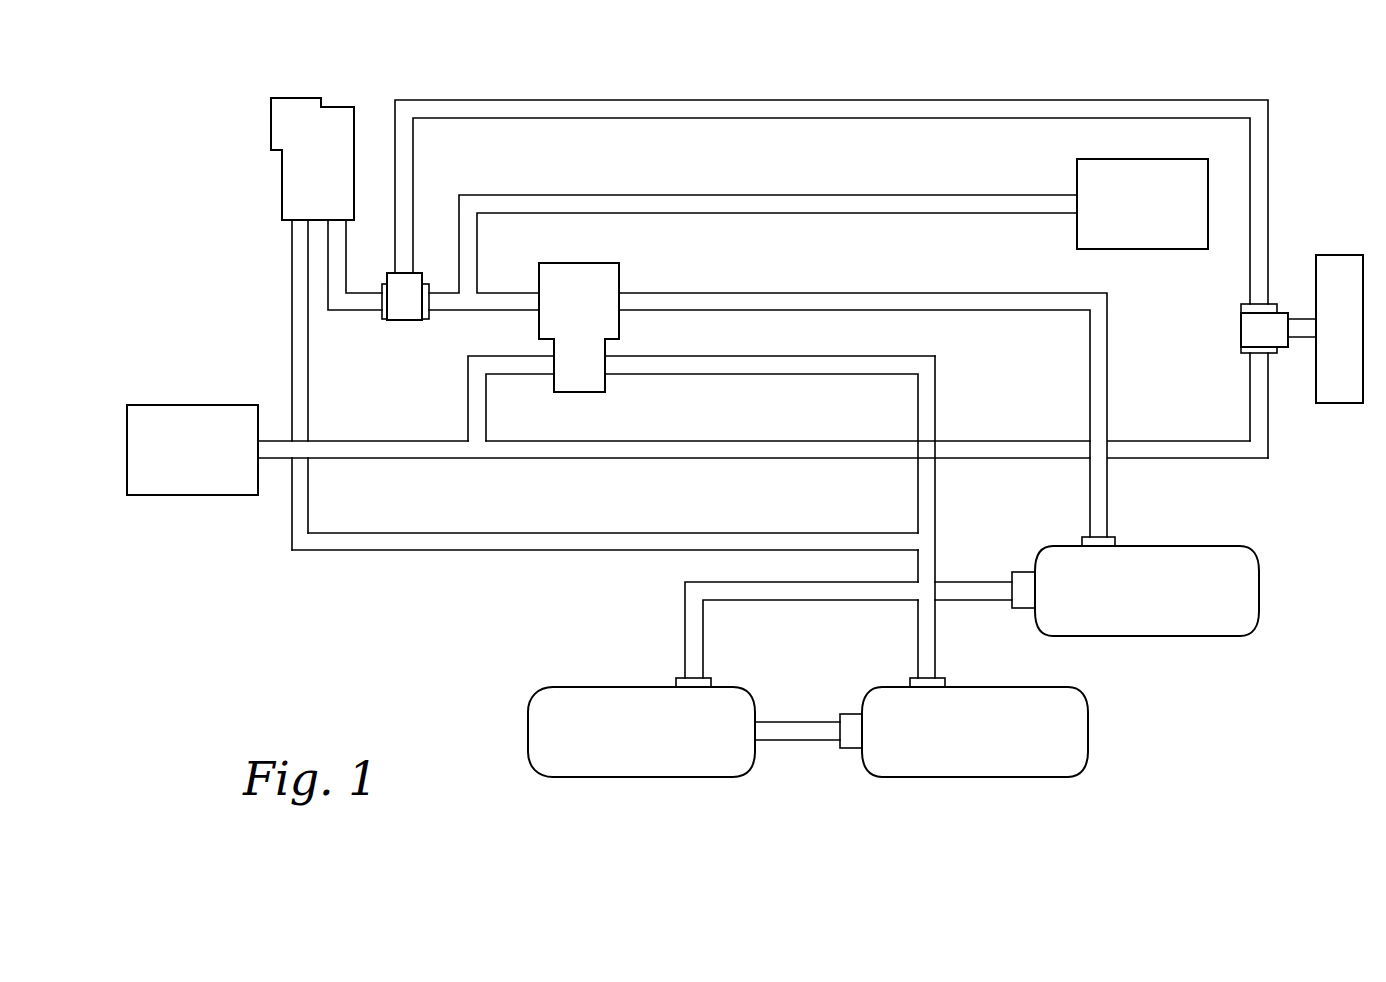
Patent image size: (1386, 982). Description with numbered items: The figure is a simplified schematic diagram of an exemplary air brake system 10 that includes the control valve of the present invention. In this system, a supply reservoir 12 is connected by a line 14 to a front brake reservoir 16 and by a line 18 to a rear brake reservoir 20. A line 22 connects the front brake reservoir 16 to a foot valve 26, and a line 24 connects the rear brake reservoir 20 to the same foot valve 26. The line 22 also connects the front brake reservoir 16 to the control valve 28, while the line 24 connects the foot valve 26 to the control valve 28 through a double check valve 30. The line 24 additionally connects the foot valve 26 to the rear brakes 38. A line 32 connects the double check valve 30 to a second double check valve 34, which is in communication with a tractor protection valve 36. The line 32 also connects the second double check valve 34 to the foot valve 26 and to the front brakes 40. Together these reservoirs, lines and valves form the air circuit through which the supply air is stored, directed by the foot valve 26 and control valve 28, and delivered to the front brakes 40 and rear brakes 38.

The air brake system 10 is at (994, 80).
The supply reservoir 12 is at (527, 712).
The line 14 is at (793, 740).
The front brake reservoir 16 is at (1088, 747).
The line 18 is at (685, 637).
The rear brake reservoir 20 is at (1259, 573).
The line 22 is at (918, 647).
The line 24 is at (873, 293).
The foot valve 26 is at (606, 263).
The control valve 28 is at (288, 180).
The double check valve 30 is at (403, 303).
The line 32 is at (753, 115).
The second double check valve 34 is at (1250, 325).
The tractor protection valve 36 is at (1340, 258).
The rear brakes 38 is at (1153, 250).
The front brakes 40 is at (192, 405).